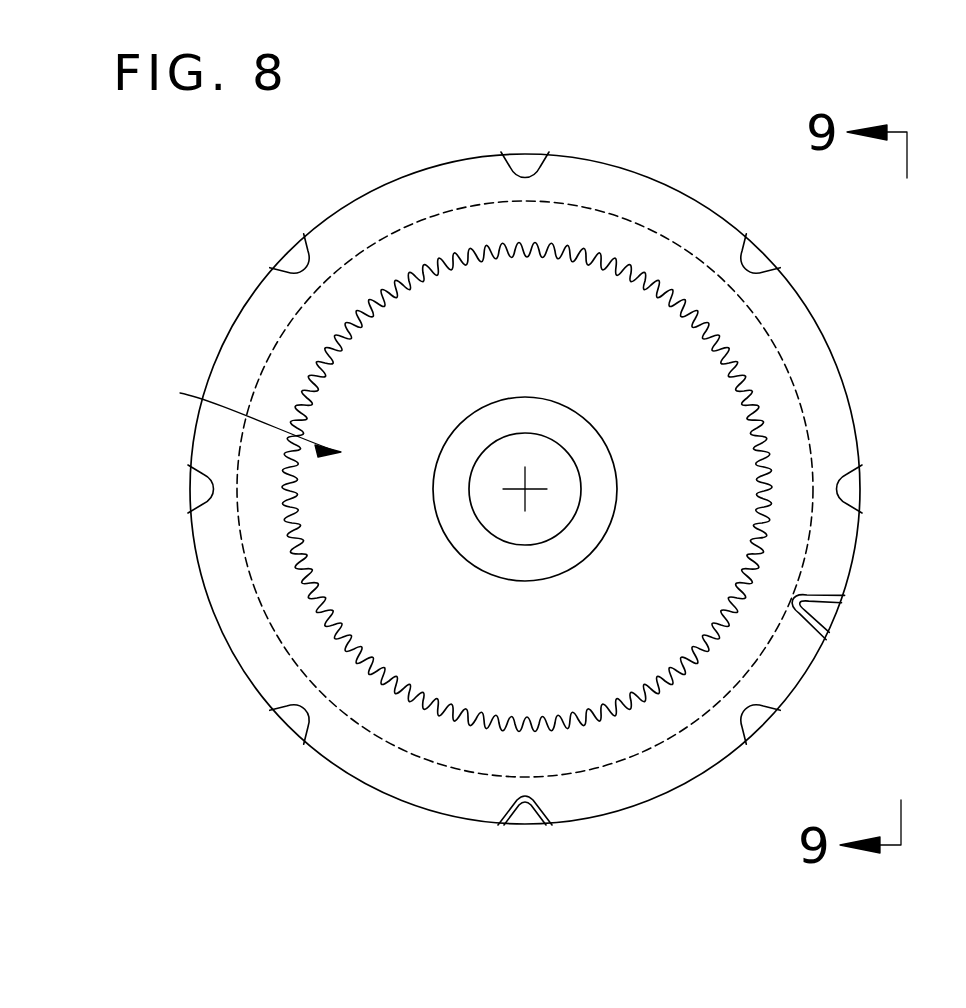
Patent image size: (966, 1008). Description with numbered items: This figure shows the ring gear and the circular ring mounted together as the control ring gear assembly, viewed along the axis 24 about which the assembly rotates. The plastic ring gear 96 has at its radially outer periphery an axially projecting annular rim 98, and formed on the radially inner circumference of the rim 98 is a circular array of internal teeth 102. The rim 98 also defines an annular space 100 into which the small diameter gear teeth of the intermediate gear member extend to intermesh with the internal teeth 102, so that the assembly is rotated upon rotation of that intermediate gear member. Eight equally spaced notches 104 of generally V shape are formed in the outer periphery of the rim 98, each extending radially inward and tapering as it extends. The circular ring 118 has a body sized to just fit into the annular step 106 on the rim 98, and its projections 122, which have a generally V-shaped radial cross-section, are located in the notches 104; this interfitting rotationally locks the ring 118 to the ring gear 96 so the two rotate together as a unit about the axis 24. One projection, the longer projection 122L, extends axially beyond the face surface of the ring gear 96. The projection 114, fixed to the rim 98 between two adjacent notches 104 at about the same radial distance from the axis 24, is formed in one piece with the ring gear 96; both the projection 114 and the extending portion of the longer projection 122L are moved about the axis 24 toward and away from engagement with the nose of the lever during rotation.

The axis 24 is at (527, 489).
The ring gear 96 is at (462, 487).
The rim 98 is at (432, 192).
The annular space 100 is at (234, 417).
The internal teeth 102 is at (298, 497).
The notches 104 is at (523, 483).
The annular step 106 is at (658, 225).
The projection 114 is at (813, 609).
The circular ring 118 is at (528, 155).
The projections 122 is at (532, 483).
The longer projection 122L is at (522, 810).